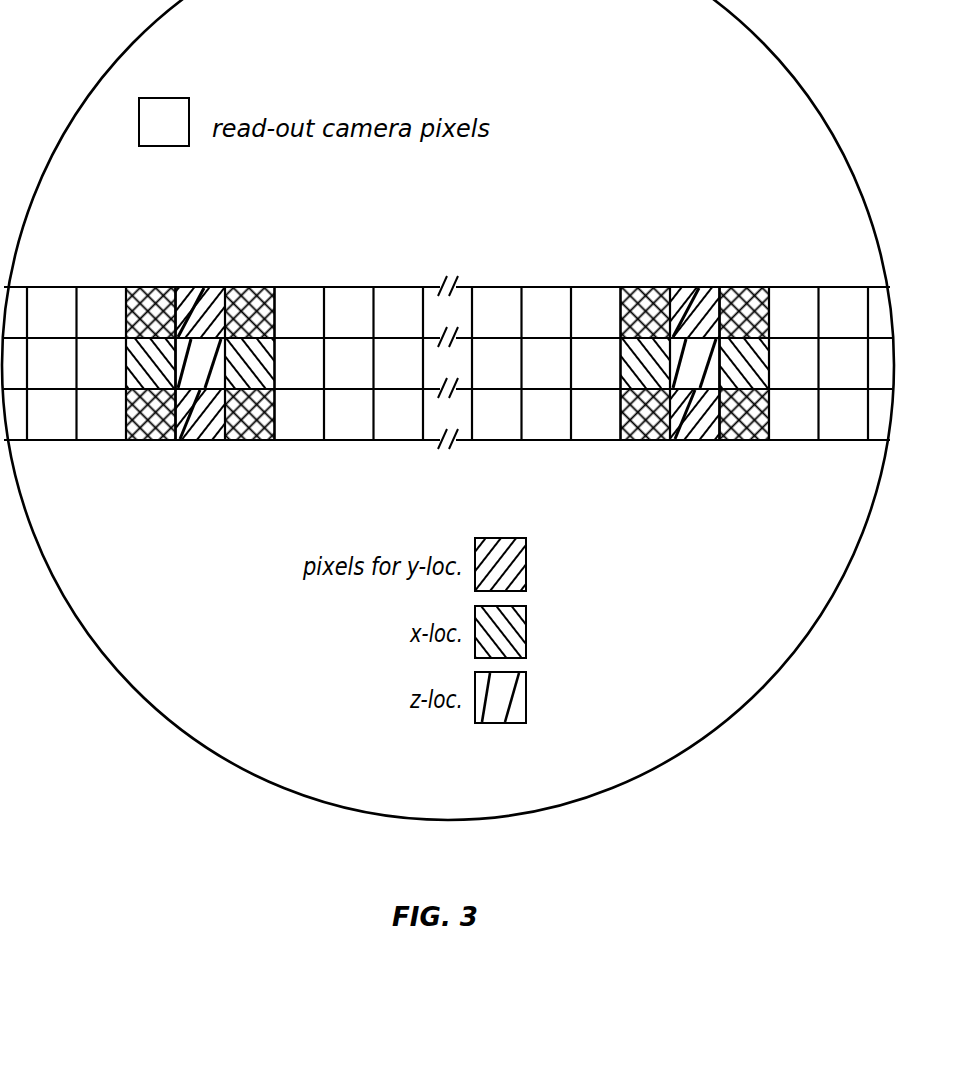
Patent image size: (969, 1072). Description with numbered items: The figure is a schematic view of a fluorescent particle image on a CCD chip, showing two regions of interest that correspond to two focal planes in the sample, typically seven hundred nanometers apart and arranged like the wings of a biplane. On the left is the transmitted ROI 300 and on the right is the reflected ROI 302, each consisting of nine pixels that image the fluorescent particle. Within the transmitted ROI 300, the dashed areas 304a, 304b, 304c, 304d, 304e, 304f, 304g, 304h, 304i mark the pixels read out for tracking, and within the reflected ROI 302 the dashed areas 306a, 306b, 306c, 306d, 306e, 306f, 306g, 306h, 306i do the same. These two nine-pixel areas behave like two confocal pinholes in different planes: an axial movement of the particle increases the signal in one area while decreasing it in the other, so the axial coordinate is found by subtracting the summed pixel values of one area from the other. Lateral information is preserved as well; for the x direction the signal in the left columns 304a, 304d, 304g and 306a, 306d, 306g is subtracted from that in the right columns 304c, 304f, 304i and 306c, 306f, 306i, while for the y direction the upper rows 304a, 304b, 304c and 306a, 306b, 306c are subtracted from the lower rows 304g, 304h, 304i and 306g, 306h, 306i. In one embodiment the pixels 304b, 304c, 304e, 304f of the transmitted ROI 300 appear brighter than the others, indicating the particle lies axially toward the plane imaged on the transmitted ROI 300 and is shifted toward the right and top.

The transmitted ROI 300 is at (175, 226).
The reflected ROI 302 is at (679, 238).
The dashed area 304a is at (166, 287).
The dashed area 304b is at (213, 287).
The dashed area 304c is at (247, 287).
The dashed area 304d is at (125, 355).
The dashed area 304e is at (185, 440).
The dashed area 304f is at (277, 355).
The dashed area 304g is at (137, 440).
The dashed area 304h is at (208, 440).
The dashed area 304i is at (258, 440).
The dashed area 306a is at (645, 288).
The dashed area 306b is at (703, 288).
The dashed area 306c is at (740, 288).
The dashed area 306d is at (619, 358).
The dashed area 306e is at (682, 440).
The dashed area 306f is at (768, 358).
The dashed area 306g is at (632, 440).
The dashed area 306h is at (705, 440).
The dashed area 306i is at (752, 440).